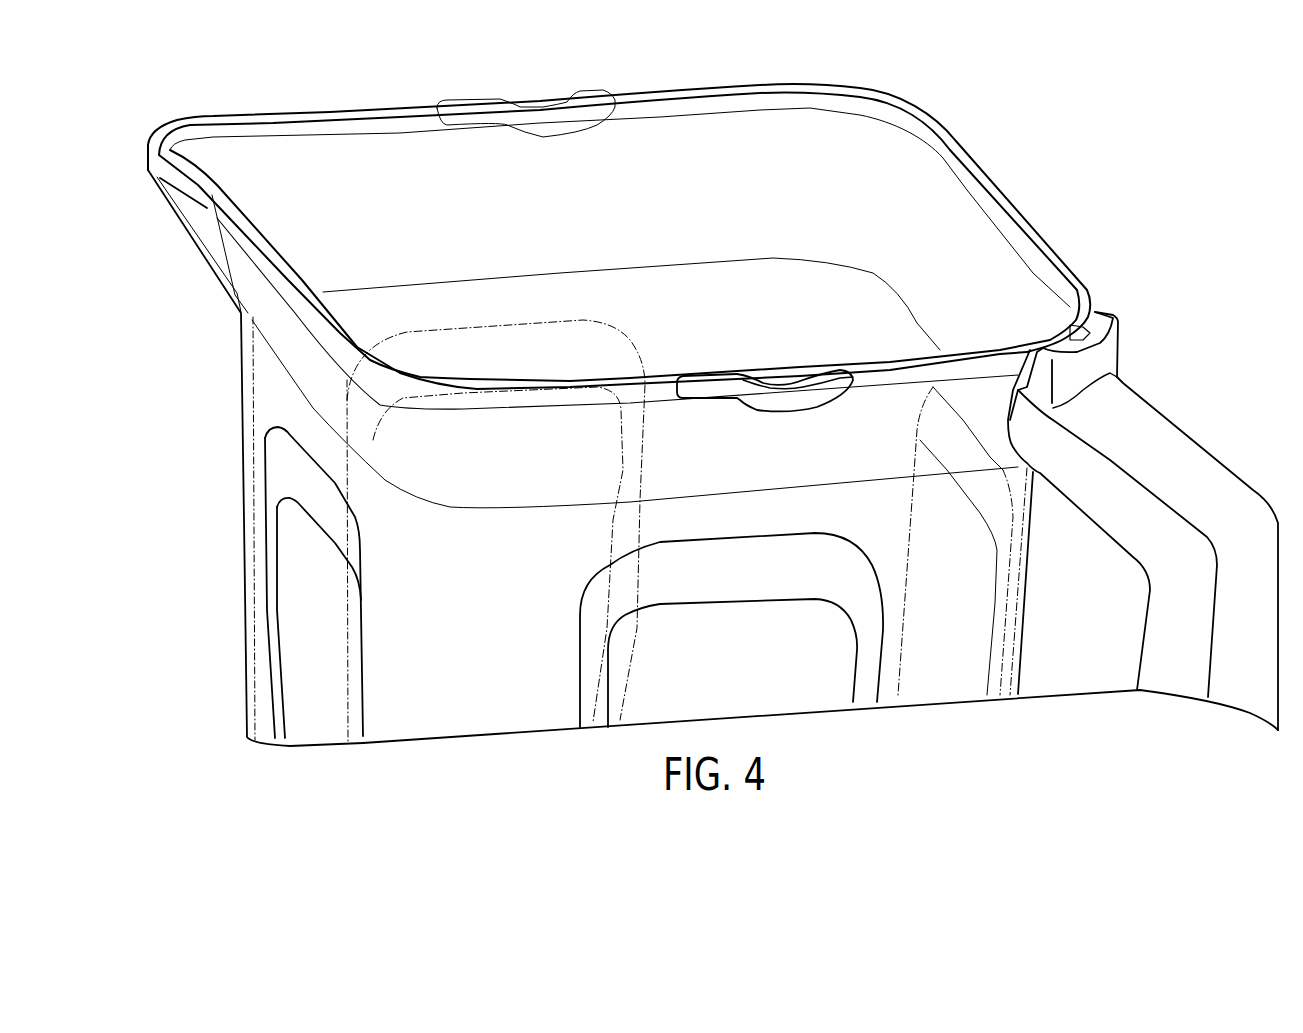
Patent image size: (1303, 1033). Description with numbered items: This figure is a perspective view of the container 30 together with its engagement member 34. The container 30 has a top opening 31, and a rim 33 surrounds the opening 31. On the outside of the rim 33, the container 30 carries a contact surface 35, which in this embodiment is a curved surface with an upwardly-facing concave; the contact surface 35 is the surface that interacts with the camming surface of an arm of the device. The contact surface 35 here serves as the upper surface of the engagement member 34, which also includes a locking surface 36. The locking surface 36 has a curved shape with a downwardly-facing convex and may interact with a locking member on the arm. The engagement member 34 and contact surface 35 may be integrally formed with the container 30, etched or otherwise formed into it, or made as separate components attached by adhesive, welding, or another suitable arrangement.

The container 30 is at (292, 573).
The top opening 31 is at (753, 147).
The rim 33 is at (1020, 217).
The engagement member 34 is at (762, 402).
The contact surface 35 is at (783, 377).
The locking surface 36 is at (837, 417).